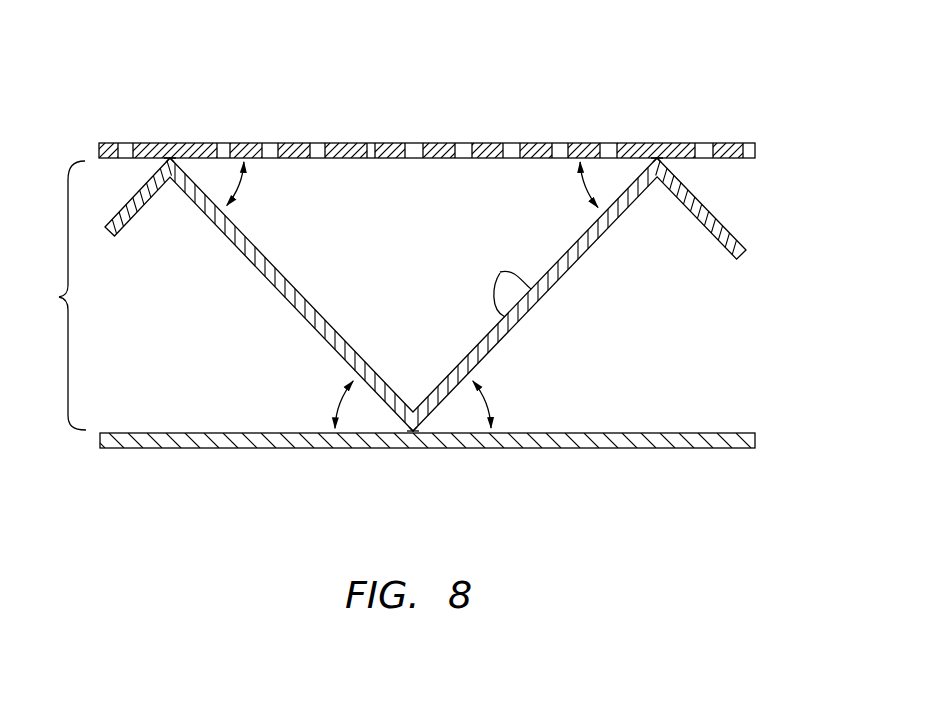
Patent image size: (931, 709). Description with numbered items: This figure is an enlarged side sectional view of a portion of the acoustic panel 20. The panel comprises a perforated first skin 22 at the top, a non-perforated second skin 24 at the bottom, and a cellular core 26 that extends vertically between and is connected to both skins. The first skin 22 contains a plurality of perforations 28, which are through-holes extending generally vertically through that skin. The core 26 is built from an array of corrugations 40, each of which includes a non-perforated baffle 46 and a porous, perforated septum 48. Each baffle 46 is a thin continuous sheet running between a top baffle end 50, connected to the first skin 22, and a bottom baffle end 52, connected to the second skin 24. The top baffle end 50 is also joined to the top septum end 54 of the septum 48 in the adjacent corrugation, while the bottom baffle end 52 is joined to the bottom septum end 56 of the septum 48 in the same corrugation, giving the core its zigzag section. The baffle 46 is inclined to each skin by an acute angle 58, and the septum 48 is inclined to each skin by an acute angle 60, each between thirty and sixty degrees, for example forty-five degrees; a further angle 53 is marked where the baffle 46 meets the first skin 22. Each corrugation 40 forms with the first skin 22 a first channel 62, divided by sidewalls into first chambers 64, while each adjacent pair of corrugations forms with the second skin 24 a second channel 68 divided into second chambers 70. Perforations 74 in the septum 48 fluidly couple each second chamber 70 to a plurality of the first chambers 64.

The acoustic panel 20 is at (733, 67).
The first skin 22 is at (419, 111).
The second skin 24 is at (100, 441).
The cellular core 26 is at (53, 295).
The perforations 28 is at (413, 148).
The corrugation 40 is at (441, 294).
The baffle 46 is at (263, 281).
The septum 48 is at (140, 223).
The top baffle end 50 is at (156, 149).
The bottom baffle end 52 is at (418, 436).
The angle between plate and leg 53 is at (240, 186).
The top septum end 54 is at (172, 156).
The bottom septum end 56 is at (411, 433).
The acute angle 58 is at (340, 404).
The acute angle 60 is at (584, 185).
The first channel 62 is at (382, 265).
The first chambers 64 is at (415, 279).
The second channel 68 is at (419, 386).
The second chambers 70 is at (195, 400).
The perforations 74 is at (499, 284).